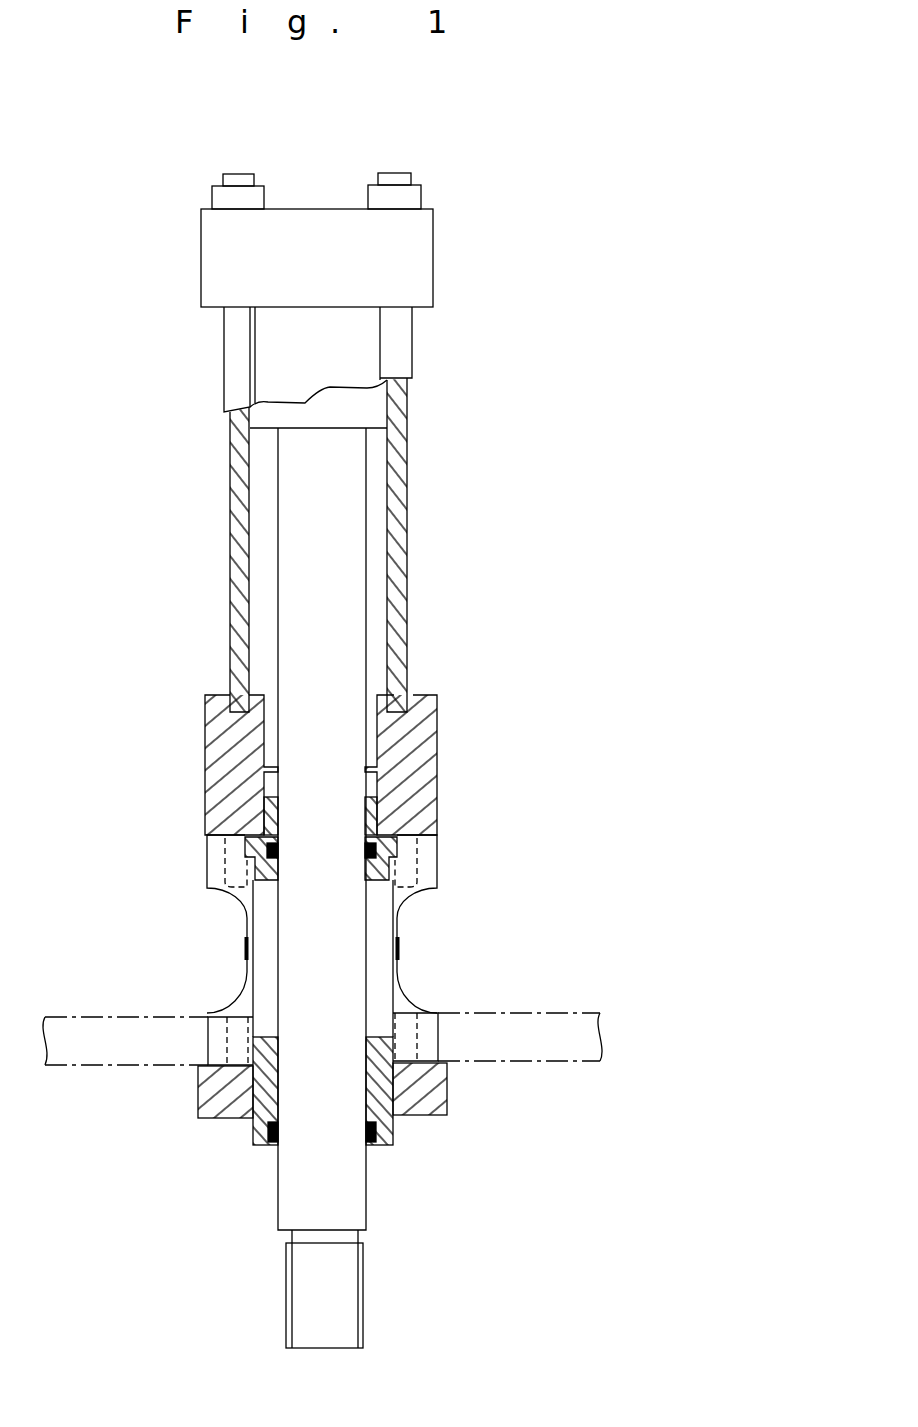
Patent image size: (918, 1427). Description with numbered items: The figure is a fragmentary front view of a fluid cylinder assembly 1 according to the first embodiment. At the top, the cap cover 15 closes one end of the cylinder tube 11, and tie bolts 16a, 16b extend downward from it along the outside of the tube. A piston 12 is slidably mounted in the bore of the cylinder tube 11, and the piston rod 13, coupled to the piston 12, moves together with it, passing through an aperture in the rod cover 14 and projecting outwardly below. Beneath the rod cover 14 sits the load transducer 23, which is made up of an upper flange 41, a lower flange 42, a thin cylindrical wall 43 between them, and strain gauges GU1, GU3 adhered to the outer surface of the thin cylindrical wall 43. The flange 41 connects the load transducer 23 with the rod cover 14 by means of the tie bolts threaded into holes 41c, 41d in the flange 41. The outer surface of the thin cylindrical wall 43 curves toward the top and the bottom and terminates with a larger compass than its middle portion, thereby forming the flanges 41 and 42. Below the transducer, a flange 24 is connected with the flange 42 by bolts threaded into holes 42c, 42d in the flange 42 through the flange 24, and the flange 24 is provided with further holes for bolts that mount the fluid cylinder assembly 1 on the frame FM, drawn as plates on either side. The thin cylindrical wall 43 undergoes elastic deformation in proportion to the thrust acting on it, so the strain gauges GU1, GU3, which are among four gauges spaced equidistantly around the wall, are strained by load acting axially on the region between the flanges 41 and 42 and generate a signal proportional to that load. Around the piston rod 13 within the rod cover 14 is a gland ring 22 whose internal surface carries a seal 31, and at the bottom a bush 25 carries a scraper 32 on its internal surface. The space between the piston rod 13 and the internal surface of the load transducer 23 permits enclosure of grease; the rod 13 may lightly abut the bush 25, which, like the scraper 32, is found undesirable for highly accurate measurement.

The fluid cylinder assembly 1 is at (90, 258).
The cylinder tube 11 is at (400, 473).
The piston 12 is at (370, 410).
The piston rod 13 is at (345, 597).
The rod cover 14 is at (417, 737).
The cap cover 15 is at (417, 248).
The tie bolt 16a is at (400, 335).
The tie bolt 16b is at (240, 352).
The gland ring 22 is at (387, 833).
The load transducer 23 is at (432, 860).
The flange 24 is at (450, 1092).
The bush 25 is at (395, 1124).
The seal 31 is at (405, 848).
The scraper 32 is at (380, 1142).
The flange 41 is at (217, 868).
The hole 41c is at (225, 900).
The hole 41d is at (413, 890).
The flange 42 is at (217, 1040).
The hole 42c is at (237, 1005).
The hole 42d is at (417, 1002).
The thin cylindrical wall 43 is at (400, 983).
The strain gauge GU1 is at (399, 947).
The strain gauge GU3 is at (243, 953).
The frame FM is at (560, 1015).